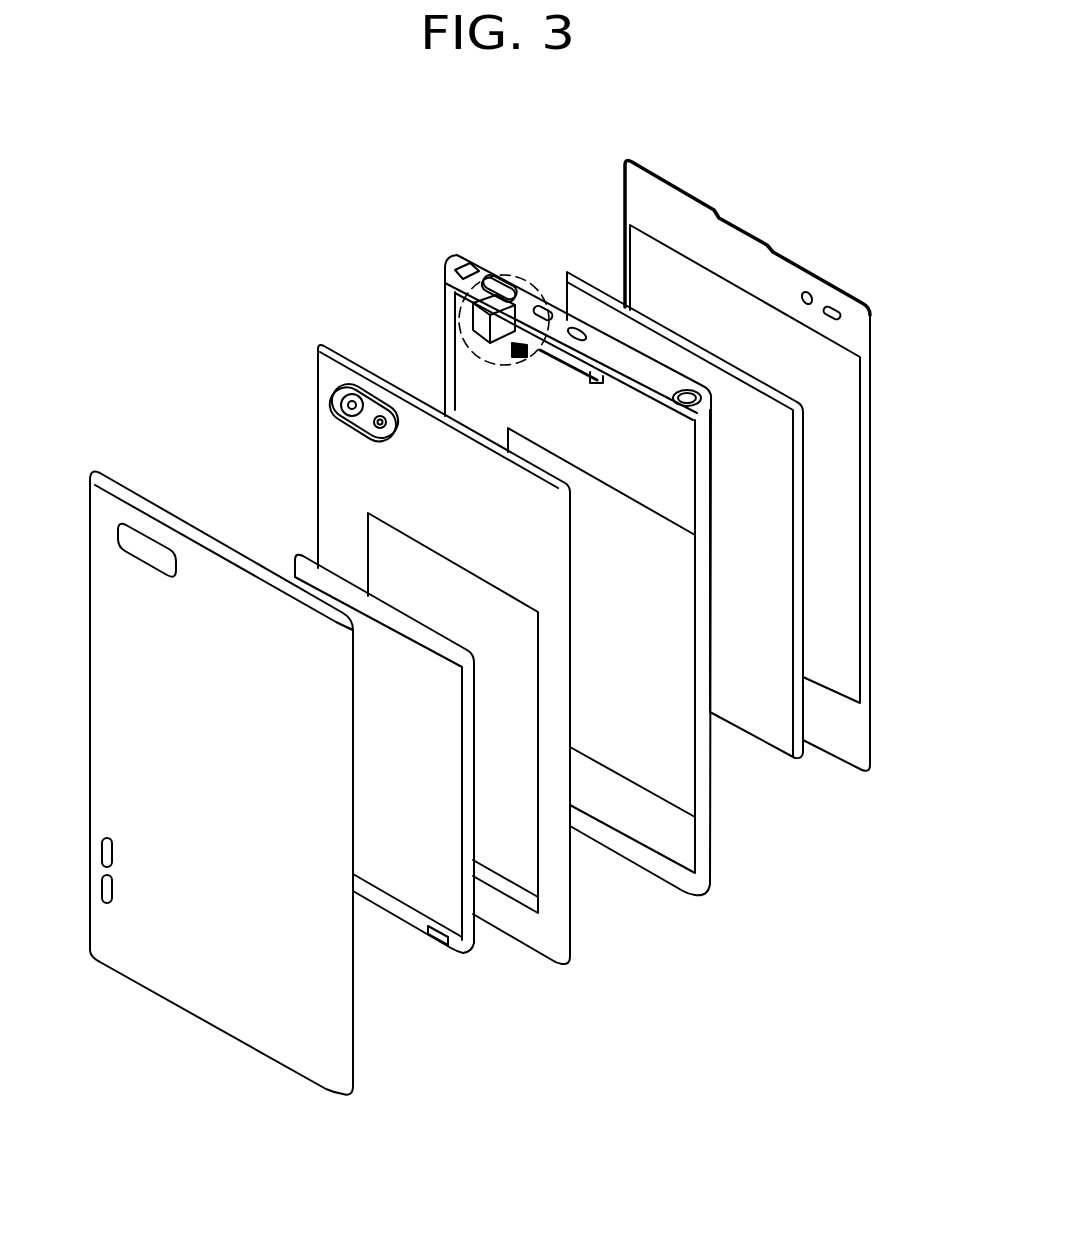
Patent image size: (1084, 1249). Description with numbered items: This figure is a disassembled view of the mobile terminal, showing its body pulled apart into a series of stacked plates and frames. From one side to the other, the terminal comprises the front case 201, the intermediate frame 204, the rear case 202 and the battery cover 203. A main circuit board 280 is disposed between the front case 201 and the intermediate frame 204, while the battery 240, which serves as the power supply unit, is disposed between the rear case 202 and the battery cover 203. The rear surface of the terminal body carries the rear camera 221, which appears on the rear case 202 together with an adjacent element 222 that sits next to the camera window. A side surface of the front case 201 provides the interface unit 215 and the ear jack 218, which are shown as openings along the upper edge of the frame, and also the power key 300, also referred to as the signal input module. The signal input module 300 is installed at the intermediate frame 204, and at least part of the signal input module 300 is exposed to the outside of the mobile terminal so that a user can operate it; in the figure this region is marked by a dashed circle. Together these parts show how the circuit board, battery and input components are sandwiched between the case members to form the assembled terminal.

The front case 201 is at (825, 290).
The rear case 202 is at (532, 935).
The battery cover 203 is at (247, 1013).
The intermediate frame 204 is at (703, 878).
The interface unit 215 is at (548, 316).
The ear jack 218 is at (687, 393).
The rear camera 221 is at (340, 399).
The flash 222 is at (375, 426).
The battery 240 is at (433, 897).
The main circuit board 280 is at (777, 728).
The power key 300 is at (445, 308).